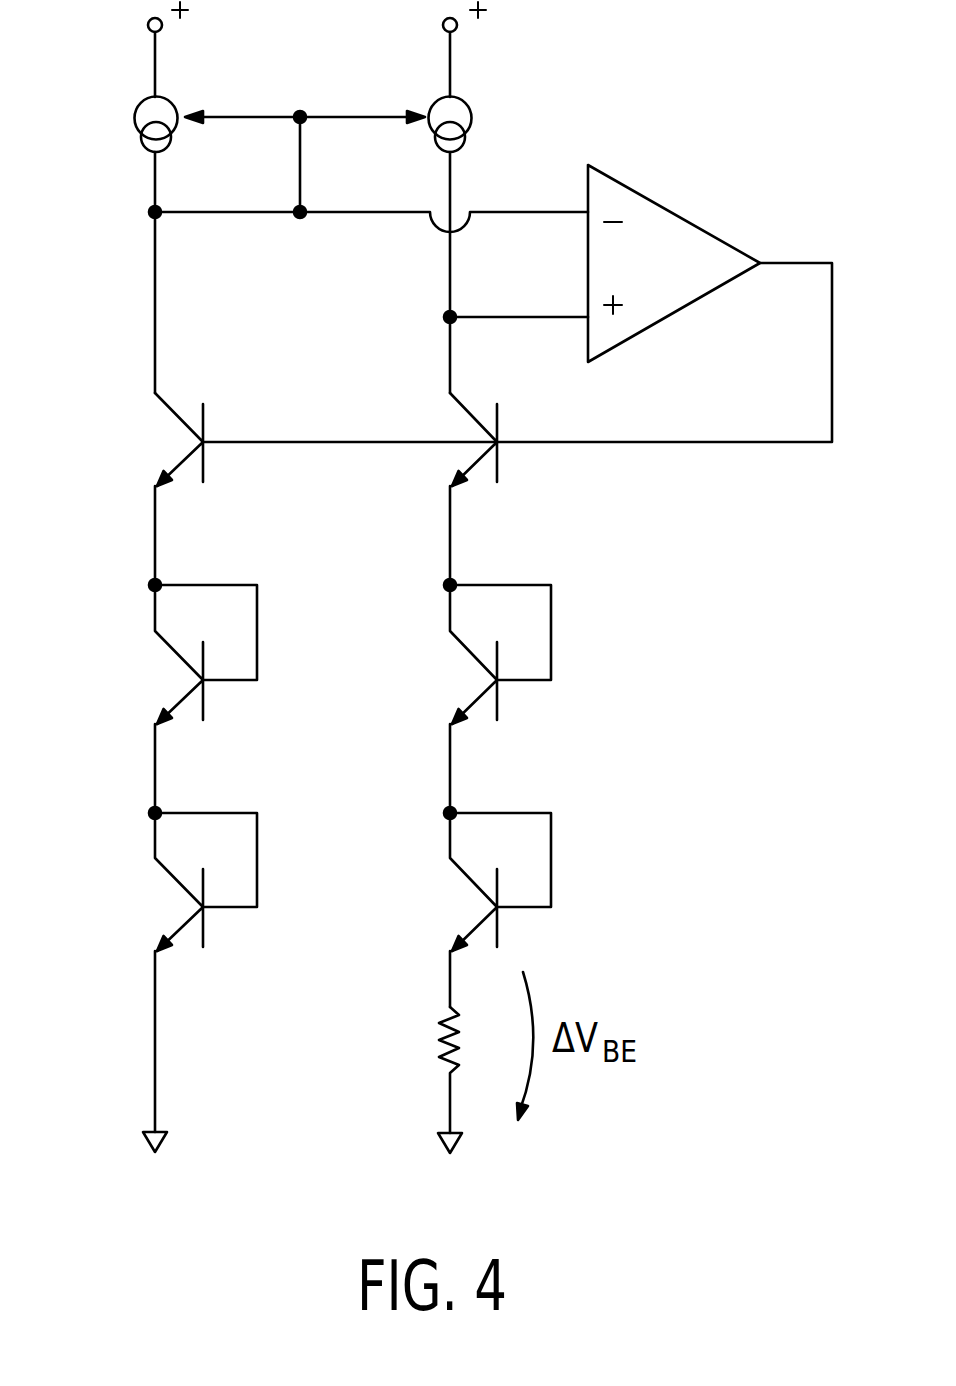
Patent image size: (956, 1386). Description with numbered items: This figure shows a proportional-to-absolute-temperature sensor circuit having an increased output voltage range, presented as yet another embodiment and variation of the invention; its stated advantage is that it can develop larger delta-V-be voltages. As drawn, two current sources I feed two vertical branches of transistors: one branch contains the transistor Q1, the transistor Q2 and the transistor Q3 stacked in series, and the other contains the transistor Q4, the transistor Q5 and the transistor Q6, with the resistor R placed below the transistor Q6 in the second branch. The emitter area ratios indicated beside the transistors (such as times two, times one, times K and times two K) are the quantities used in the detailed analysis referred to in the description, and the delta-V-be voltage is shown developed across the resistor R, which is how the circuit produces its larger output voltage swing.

The current sources I is at (302, 122).
The transistor Q1 (x2) Q1 is at (151, 486).
The transistor Q2 (x2) Q2 is at (178, 696).
The transistor Q3 (xK) Q3 is at (178, 969).
The transistor Q4 (x1) Q4 is at (446, 486).
The transistor Q5 (x2K) Q5 is at (465, 696).
The transistor Q6 (x2K) Q6 is at (465, 907).
The resistor R is at (466, 1070).